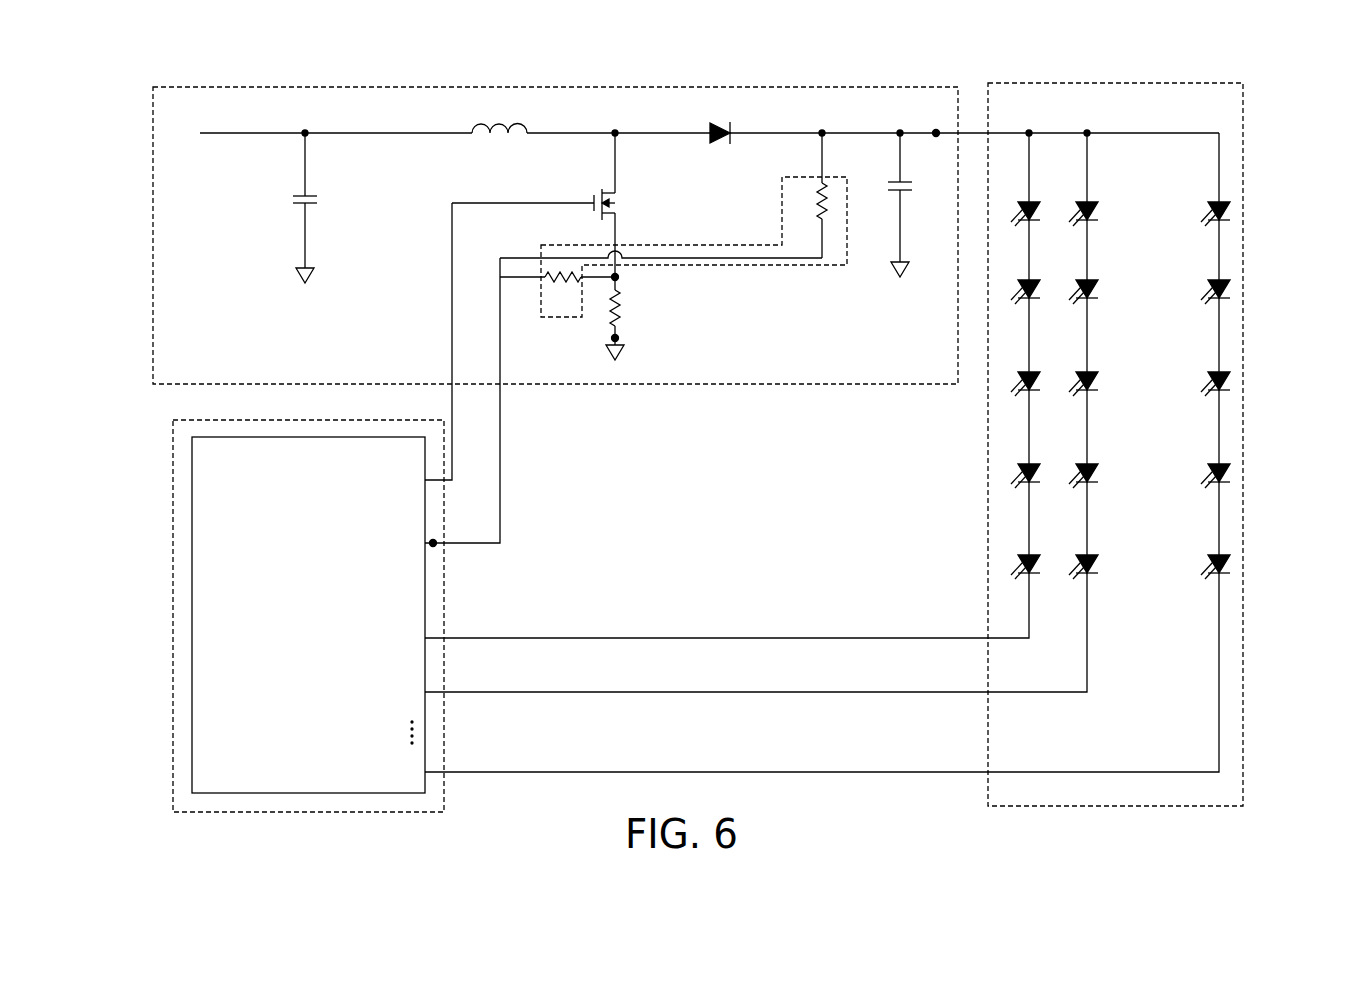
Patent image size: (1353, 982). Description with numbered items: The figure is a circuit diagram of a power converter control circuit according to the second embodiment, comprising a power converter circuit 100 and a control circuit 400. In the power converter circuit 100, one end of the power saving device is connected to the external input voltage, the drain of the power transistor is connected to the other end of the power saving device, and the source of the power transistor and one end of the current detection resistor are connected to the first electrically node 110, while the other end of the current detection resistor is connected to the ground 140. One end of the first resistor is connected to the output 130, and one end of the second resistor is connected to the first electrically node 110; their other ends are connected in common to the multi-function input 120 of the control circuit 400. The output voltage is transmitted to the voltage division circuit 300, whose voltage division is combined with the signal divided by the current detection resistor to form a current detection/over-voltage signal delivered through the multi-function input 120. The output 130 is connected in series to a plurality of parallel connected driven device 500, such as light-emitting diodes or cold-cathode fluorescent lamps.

The power converter circuit 100 is at (368, 88).
The first electrically node 110 is at (618, 279).
The multi-function input 120 is at (433, 545).
The output 130 is at (936, 131).
The ground 140 is at (618, 340).
The voltage division circuit 300 is at (810, 266).
The control circuit 400 is at (172, 575).
The driven device 500 is at (1243, 242).